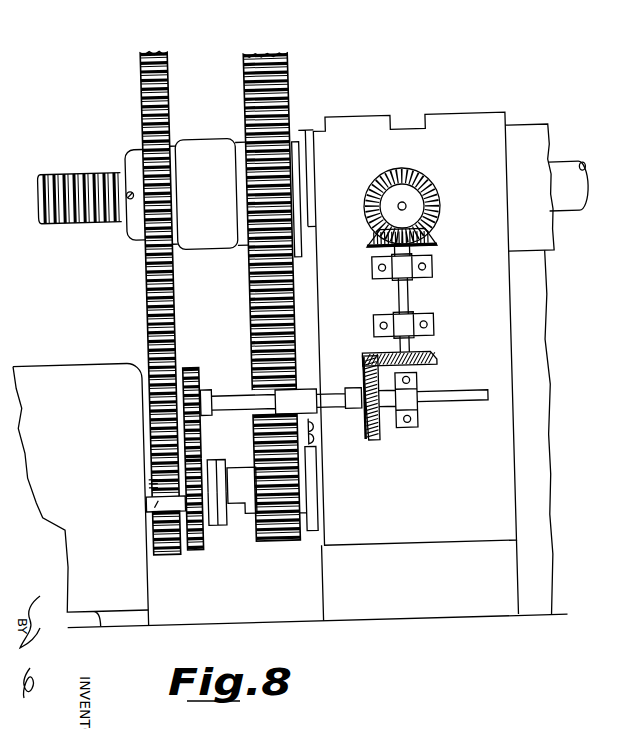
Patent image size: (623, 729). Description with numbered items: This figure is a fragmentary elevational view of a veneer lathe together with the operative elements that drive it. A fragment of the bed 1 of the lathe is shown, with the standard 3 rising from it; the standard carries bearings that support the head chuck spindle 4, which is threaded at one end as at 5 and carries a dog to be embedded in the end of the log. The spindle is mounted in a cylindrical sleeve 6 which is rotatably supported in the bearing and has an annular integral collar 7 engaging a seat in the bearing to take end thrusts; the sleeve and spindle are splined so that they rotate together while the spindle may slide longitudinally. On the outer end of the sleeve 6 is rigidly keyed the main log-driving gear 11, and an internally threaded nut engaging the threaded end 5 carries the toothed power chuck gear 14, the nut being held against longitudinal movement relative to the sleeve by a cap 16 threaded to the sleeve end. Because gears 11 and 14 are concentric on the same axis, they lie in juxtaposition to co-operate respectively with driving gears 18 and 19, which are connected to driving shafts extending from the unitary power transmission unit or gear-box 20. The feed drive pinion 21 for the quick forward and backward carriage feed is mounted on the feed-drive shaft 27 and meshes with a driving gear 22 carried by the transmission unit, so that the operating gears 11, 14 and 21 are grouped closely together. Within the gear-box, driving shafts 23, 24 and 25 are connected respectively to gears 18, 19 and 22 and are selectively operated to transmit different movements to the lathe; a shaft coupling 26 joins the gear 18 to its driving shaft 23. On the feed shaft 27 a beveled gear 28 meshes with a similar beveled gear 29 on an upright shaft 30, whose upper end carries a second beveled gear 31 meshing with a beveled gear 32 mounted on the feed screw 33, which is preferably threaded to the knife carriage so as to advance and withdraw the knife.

The bed 1 is at (420, 580).
The standard 3 is at (415, 328).
The head chuck spindle 4 is at (568, 186).
The threaded end of spindle 5 is at (58, 179).
The cylindrical sleeve 6 is at (310, 198).
The annular integral collar 7 is at (529, 187).
The main log-driving gear 11 is at (265, 56).
The toothed driving gear 14 is at (148, 328).
The cap 16 is at (206, 193).
The driving gear 18 is at (292, 541).
The driving gear 19 is at (175, 553).
The power transmission unit 20 is at (81, 495).
The feed drive pinion 21 is at (195, 374).
The driving gear 22 is at (204, 551).
The driving shaft 23 is at (239, 484).
The driving shaft 24 is at (143, 478).
The driving shaft 25 is at (142, 509).
The shaft coupling 26 is at (227, 525).
The feed-drive shaft 27 is at (466, 399).
The beveled gear 28 is at (371, 440).
The beveled gear 29 is at (437, 360).
The upright shaft 30 is at (402, 301).
The beveled gear 31 is at (368, 248).
The beveled gear 32 is at (428, 190).
The feed screw 33 is at (410, 211).